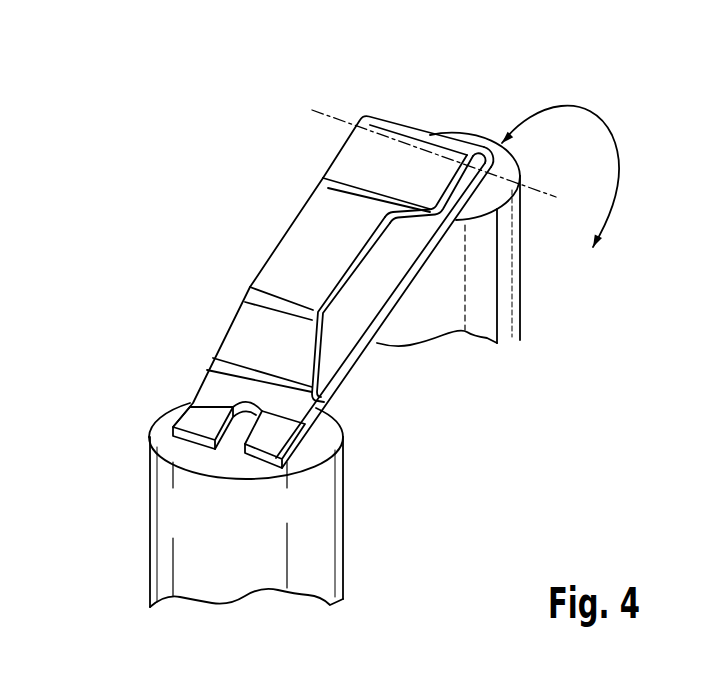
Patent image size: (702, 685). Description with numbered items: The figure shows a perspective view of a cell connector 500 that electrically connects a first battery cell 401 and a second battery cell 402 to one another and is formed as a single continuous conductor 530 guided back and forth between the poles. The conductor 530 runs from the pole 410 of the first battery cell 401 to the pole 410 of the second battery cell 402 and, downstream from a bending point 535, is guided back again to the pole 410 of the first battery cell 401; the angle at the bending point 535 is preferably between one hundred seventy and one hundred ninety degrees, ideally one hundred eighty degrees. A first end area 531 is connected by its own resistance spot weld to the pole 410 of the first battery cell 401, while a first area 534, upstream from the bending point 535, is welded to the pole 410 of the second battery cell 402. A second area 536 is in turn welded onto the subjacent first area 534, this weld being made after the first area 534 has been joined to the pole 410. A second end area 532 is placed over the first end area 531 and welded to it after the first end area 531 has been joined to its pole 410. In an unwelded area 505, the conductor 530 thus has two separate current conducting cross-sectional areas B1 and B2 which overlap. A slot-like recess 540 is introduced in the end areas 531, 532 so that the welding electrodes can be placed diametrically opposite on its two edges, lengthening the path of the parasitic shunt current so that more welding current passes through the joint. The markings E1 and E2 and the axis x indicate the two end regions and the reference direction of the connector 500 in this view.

The cell connector 500 is at (152, 158).
The unwelded area 505 is at (237, 191).
The continuous conductor 530 is at (319, 217).
The first end area 531 is at (198, 428).
The second end area 532 is at (205, 412).
The first area 534 is at (460, 202).
The bending point 535 is at (465, 152).
The second area 536 is at (413, 167).
The slot 540 is at (222, 400).
The first battery cell 401 is at (310, 537).
The second battery cell 402 is at (505, 275).
The pole 410 is at (447, 132).
The first end E1 is at (162, 408).
The second end E2 is at (347, 109).
The first current conducting cross-sectional area B1 is at (363, 322).
The second current conducting cross-sectional area B2 is at (282, 244).
The axis x is at (444, 162).